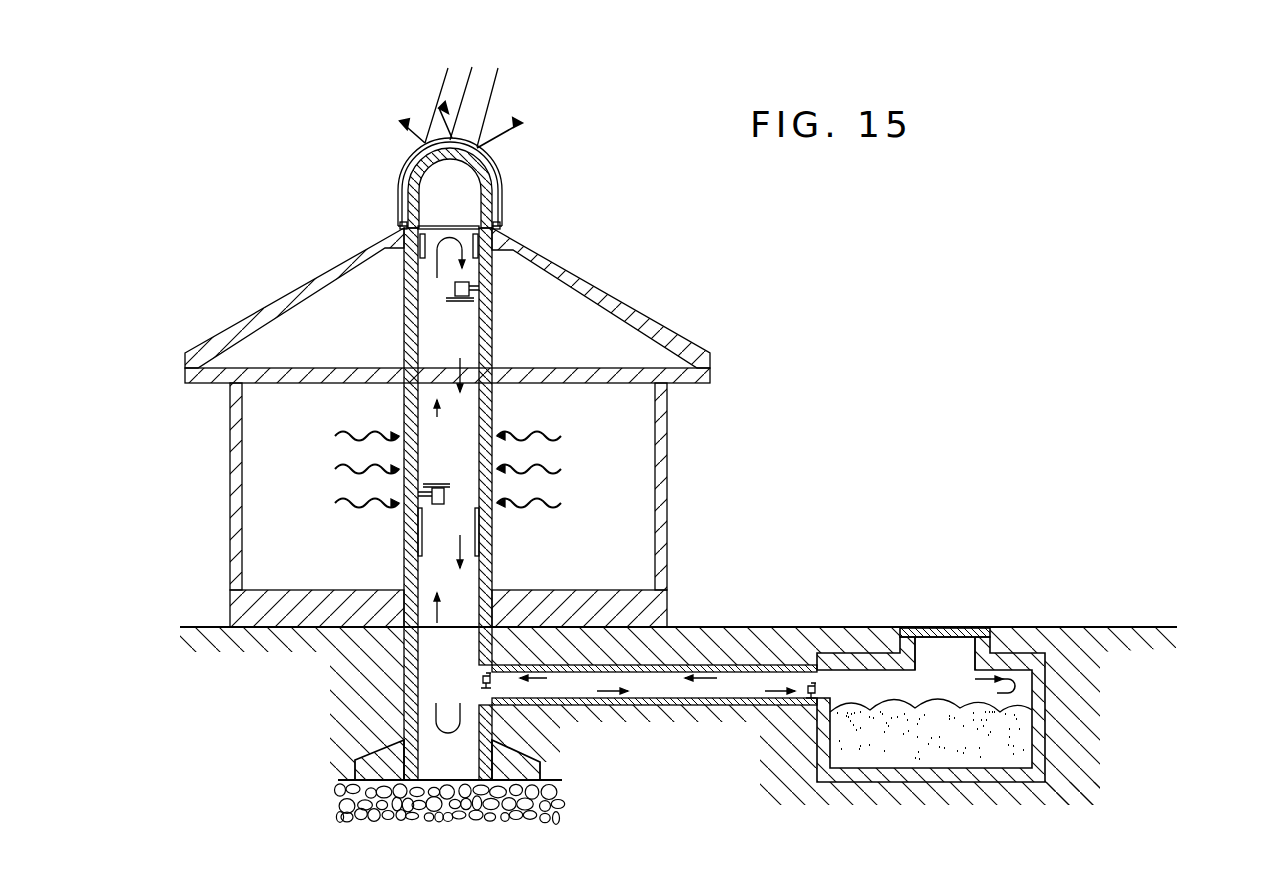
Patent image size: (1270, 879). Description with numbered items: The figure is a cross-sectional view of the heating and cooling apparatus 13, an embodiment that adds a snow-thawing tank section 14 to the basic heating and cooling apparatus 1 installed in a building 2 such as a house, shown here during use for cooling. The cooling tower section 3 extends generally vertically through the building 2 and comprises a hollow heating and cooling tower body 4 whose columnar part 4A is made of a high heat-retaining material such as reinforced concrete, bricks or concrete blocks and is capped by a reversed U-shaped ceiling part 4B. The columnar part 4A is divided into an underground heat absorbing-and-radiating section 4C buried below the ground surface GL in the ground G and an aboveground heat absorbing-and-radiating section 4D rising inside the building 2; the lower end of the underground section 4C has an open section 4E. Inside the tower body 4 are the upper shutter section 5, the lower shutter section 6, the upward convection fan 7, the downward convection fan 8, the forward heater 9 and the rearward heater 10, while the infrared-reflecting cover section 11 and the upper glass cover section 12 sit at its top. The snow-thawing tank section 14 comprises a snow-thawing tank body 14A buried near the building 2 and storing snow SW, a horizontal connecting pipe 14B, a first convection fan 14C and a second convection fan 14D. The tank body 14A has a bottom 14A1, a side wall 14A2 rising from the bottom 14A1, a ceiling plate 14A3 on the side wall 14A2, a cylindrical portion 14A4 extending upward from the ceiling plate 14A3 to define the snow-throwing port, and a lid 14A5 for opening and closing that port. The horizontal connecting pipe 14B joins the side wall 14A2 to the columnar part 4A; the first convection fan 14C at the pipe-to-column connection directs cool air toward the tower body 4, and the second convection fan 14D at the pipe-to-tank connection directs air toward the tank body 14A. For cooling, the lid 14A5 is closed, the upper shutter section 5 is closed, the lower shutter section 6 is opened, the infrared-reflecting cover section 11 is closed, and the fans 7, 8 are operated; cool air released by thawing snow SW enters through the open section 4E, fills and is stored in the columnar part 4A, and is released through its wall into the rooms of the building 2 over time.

The heating and cooling apparatus 1 is at (291, 283).
The building 2 is at (668, 467).
The cooling tower section 3 is at (493, 400).
The heating and cooling tower body 4 is at (492, 545).
The columnar part 4A is at (494, 722).
The reversed U-shaped ceiling part 4B is at (493, 197).
The underground heat absorbing-and-radiating section 4C is at (404, 720).
The aboveground heat absorbing-and-radiating section 4D is at (404, 397).
The open section 4E is at (400, 747).
The upper shutter section 5 is at (480, 243).
The lower shutter section 6 is at (402, 598).
The upward convection fan 7 is at (420, 506).
The downward convection fan 8 is at (480, 287).
The forward heater 9 is at (479, 527).
The rearward heater 10 is at (418, 546).
The infrared-reflecting cover section 11 is at (488, 168).
The upper glass cover section 12 is at (400, 192).
The heating and cooling apparatus 13 is at (690, 622).
The snow-thawing tank section 14 is at (1068, 665).
The snow-thawing tank body 14A is at (1048, 697).
The bottom 14A1 is at (868, 790).
The side wall 14A2 is at (1048, 770).
The ceiling plate 14A3 is at (1035, 665).
The cylindrical portion 14A4 is at (990, 648).
The lid 14A5 is at (933, 628).
The horizontal connecting pipe 14B is at (632, 706).
The first convection fan 14C is at (482, 680).
The second convection fan 14D is at (809, 699).
The ground G is at (1150, 645).
The ground surface GL is at (1145, 627).
The snow SW is at (988, 750).